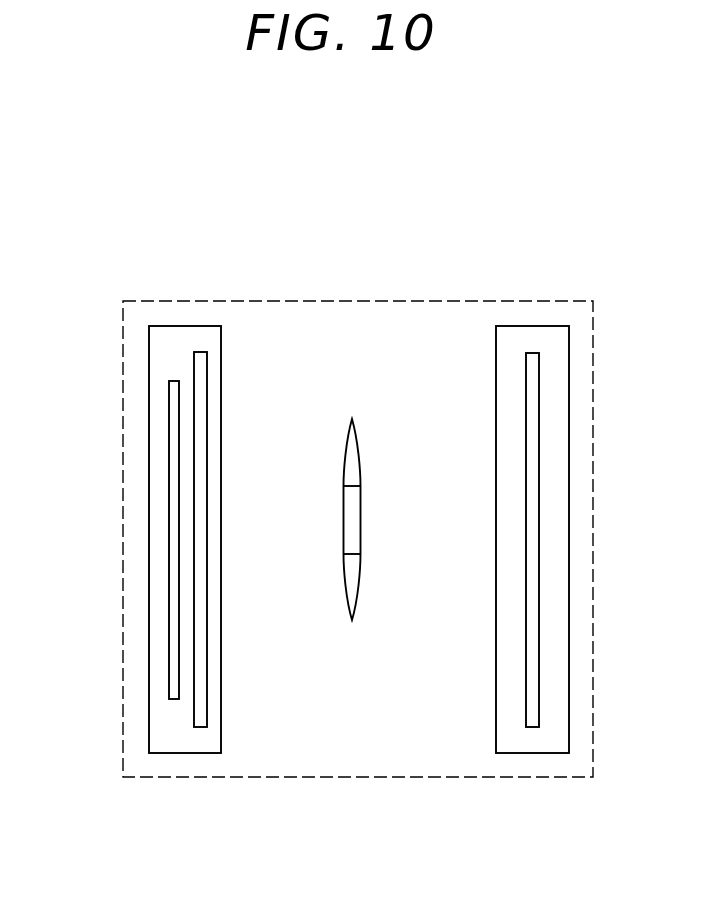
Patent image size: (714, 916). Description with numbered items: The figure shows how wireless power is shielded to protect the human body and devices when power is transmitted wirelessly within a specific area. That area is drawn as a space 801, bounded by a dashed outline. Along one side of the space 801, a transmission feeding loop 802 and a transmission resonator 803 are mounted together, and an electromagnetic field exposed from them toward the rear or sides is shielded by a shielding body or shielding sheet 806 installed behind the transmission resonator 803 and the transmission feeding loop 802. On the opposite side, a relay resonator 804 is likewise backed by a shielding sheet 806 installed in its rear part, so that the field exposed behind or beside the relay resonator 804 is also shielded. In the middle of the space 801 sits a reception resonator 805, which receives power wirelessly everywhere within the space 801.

The space 801 is at (122, 541).
The transmission feeding loop 802 is at (170, 672).
The transmission resonator 803 is at (207, 706).
The relay resonator 804 is at (531, 727).
The reception resonator 805 is at (361, 520).
The shielding sheet 806 is at (184, 326).